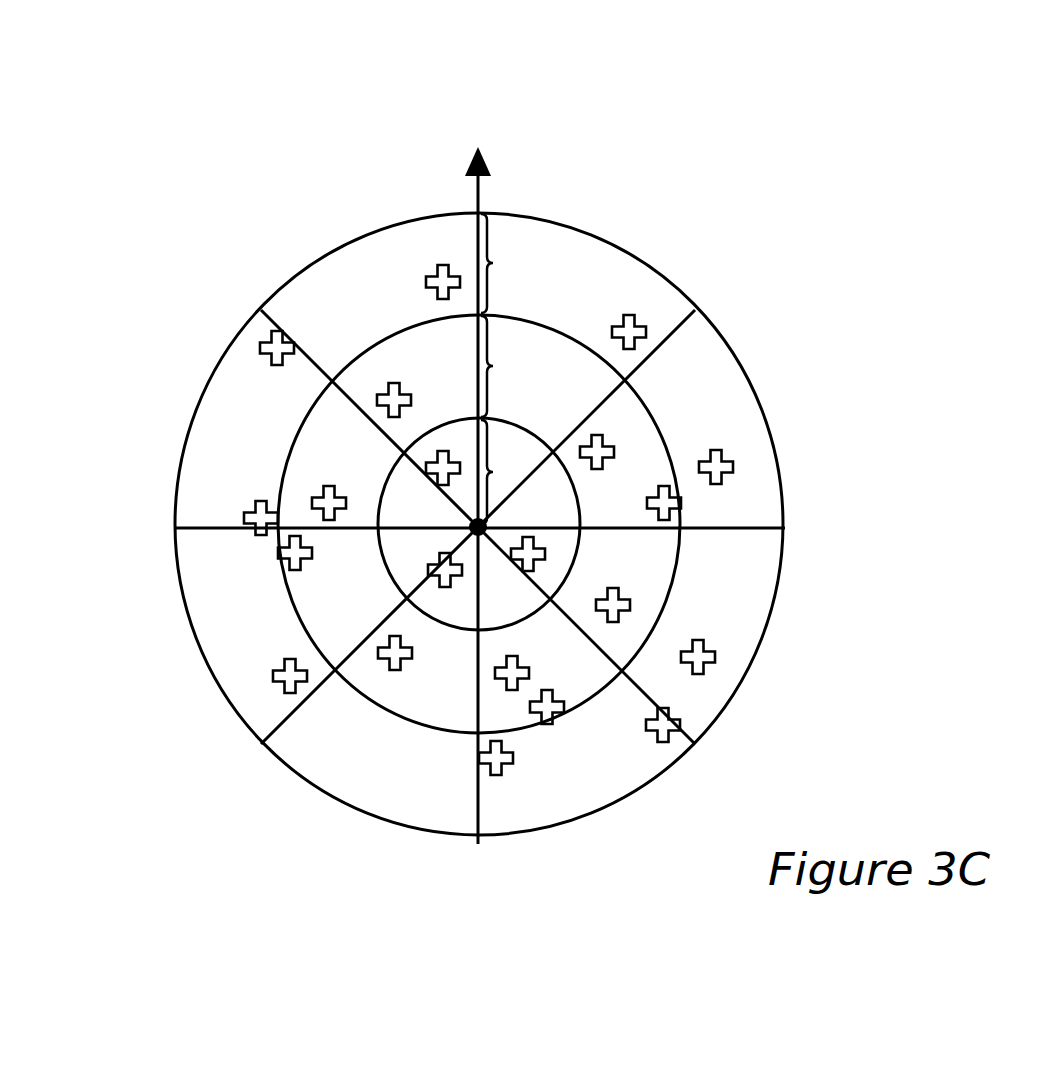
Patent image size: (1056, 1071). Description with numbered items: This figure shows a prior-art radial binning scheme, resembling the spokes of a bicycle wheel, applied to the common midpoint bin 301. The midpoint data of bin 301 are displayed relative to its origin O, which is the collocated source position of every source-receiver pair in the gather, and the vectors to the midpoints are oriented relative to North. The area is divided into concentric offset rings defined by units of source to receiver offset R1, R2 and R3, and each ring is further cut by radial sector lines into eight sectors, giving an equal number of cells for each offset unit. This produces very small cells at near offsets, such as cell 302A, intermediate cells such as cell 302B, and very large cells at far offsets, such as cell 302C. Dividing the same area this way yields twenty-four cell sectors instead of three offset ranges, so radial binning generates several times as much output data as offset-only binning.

The common midpoint bin 301 is at (667, 122).
The cell 302A is at (445, 559).
The cell 302B is at (392, 610).
The cell 302C is at (291, 644).
The unit of source to receiver offset R1 is at (507, 472).
The unit of source to receiver offset R2 is at (511, 366).
The unit of source to receiver offset R3 is at (511, 263).